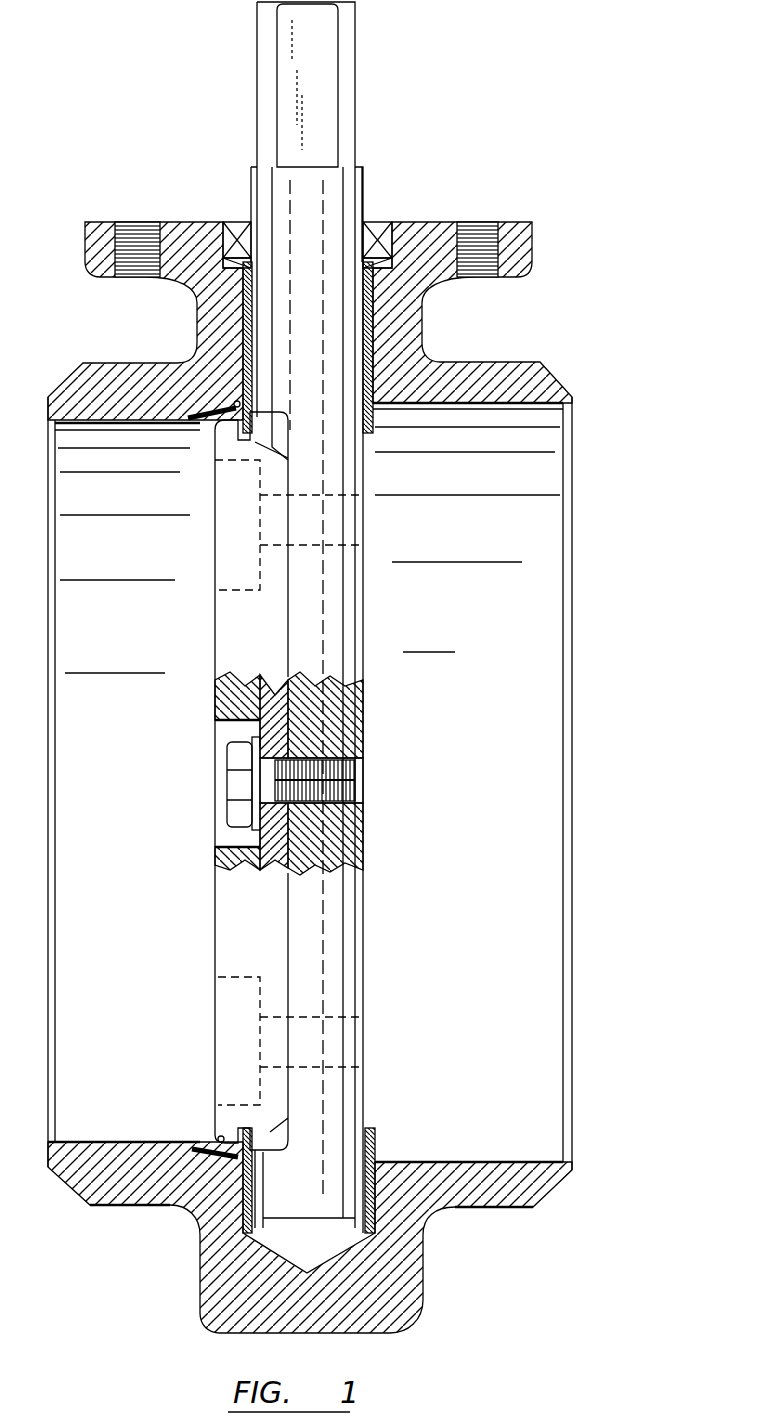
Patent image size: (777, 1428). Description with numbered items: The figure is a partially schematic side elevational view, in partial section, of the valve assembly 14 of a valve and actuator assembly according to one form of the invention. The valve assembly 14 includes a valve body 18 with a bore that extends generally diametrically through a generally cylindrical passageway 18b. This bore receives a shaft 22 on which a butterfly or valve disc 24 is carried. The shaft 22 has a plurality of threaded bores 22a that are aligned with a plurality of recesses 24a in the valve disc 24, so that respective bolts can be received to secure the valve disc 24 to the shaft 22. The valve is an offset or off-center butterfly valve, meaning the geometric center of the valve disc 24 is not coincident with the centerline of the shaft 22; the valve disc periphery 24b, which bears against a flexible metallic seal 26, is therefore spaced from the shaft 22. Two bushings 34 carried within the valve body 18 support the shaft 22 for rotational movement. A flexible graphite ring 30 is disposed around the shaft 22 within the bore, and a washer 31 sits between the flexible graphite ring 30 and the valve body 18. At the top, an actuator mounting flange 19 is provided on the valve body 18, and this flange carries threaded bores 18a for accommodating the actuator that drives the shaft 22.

The valve assembly 14 is at (552, 177).
The valve body 18 is at (483, 1207).
The threaded bores 18a is at (160, 280).
The cylindrical passageway 18b is at (487, 1162).
The actuator mounting flange 19 is at (532, 237).
The shaft 22 is at (355, 65).
The threaded bores 22a is at (323, 548).
The valve disc 24 is at (215, 695).
The recesses 24a is at (215, 570).
The valve disc periphery 24b is at (223, 1140).
The flexible metallic seal 26 is at (200, 412).
The flexible graphite ring 30 is at (375, 240).
The washer 31 is at (395, 262).
The bushings 34 is at (373, 432).